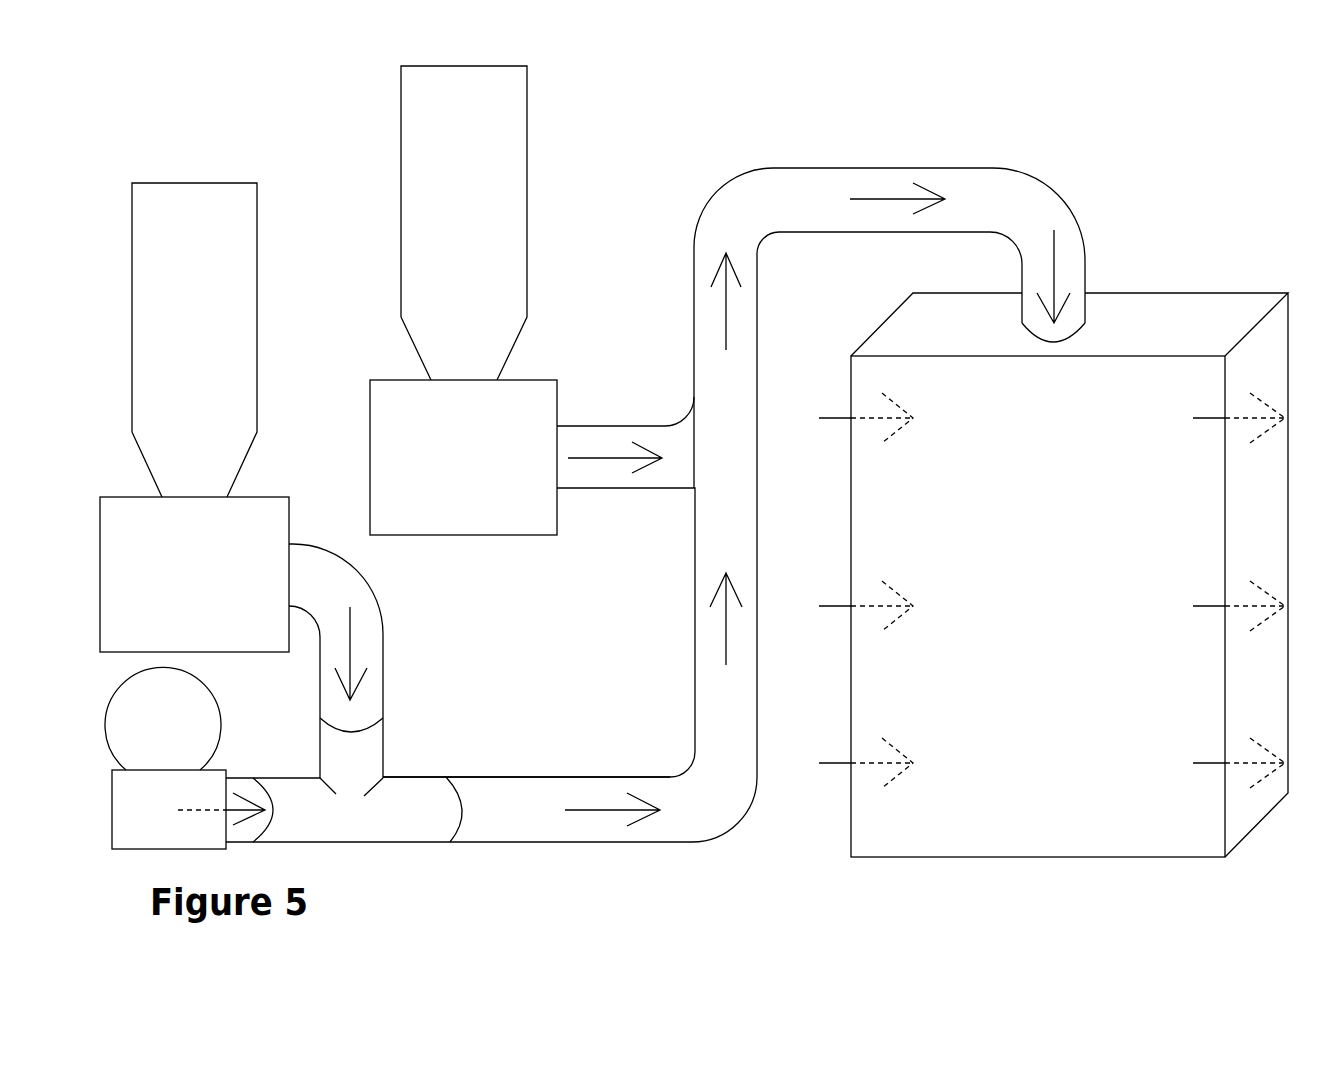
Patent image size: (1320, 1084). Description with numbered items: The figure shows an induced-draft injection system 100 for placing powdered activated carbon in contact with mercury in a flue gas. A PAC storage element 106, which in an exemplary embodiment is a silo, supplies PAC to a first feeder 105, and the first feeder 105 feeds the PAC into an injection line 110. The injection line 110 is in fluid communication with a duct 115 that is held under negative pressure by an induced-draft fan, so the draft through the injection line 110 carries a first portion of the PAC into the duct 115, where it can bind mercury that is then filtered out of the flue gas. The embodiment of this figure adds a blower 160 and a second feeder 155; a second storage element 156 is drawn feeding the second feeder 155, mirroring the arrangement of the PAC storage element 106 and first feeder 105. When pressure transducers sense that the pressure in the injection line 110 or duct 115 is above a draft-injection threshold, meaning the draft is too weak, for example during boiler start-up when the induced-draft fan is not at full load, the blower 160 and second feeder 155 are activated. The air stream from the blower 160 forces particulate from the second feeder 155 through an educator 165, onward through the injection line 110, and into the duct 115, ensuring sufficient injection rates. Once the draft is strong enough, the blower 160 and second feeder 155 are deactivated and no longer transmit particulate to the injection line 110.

The induced-draft injection system 100 is at (889, 435).
The first feeder 105 is at (495, 505).
The PAC storage element 106 is at (438, 262).
The injection line 110 is at (694, 295).
The duct 115 is at (988, 500).
The second feeder 155 is at (242, 543).
The second hopper 156 is at (225, 356).
The blower 160 is at (172, 717).
The educator 165 is at (428, 735).